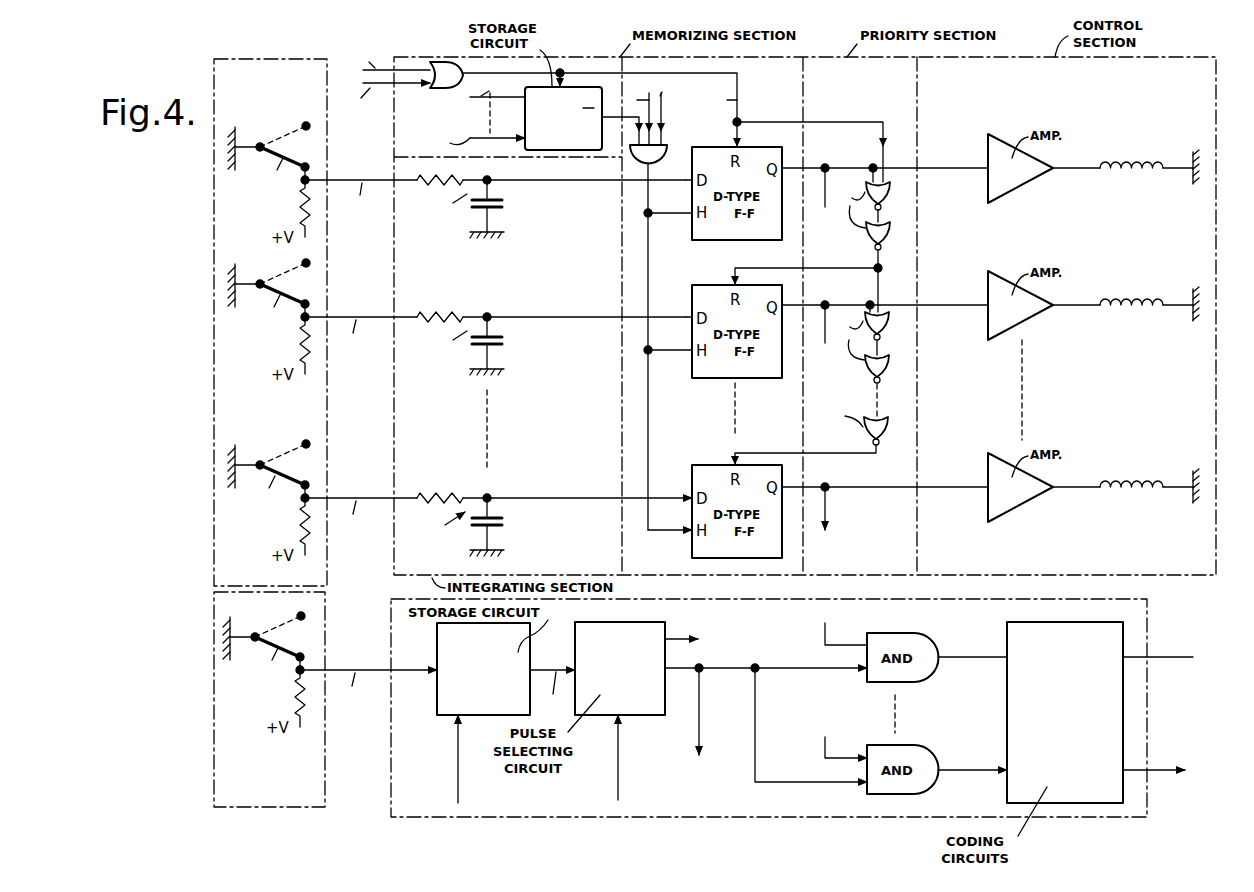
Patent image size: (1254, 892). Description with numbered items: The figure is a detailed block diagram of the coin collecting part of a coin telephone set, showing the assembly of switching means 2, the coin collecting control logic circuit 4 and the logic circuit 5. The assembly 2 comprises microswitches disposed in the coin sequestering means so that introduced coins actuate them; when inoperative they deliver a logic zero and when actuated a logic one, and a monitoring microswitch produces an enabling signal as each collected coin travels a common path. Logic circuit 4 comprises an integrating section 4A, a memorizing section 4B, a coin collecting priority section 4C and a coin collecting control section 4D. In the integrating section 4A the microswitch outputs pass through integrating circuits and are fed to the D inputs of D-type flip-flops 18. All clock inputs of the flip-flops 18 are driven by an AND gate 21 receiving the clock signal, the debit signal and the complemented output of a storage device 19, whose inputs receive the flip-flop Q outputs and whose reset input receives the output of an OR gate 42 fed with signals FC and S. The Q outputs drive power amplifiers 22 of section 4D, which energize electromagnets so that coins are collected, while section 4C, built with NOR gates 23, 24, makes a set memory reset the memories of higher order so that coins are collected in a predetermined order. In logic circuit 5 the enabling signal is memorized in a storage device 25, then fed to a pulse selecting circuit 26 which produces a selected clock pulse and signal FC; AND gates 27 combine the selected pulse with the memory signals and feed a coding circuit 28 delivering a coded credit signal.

The assembly of switching means 2 is at (213, 91).
The logic circuit 4 is at (1187, 578).
The integrating section 4A is at (495, 365).
The memorizing section 4B is at (614, 316).
The coin collecting priority section 4C is at (845, 270).
The coin collecting control section 4D is at (1093, 310).
The logic circuit 5 is at (391, 610).
The D-type flip-flop 18 is at (700, 545).
The storage device 19 is at (507, 118).
The AND gate 21 is at (627, 157).
The power amplifier 22 is at (1013, 500).
The NOR gate 23 is at (890, 322).
The NOR gate 24 is at (889, 425).
The storage device 25 is at (483, 713).
The pulse selecting circuit 26 is at (648, 711).
The AND gate 27 is at (941, 736).
The coding circuit 28 is at (1111, 712).
The OR gate 42 is at (435, 86).